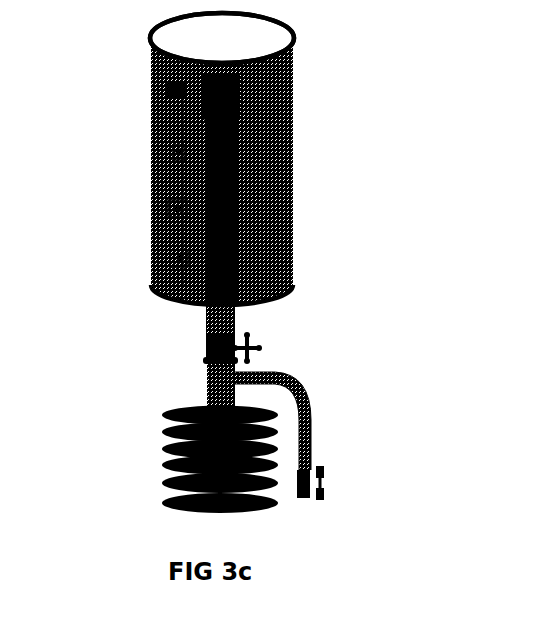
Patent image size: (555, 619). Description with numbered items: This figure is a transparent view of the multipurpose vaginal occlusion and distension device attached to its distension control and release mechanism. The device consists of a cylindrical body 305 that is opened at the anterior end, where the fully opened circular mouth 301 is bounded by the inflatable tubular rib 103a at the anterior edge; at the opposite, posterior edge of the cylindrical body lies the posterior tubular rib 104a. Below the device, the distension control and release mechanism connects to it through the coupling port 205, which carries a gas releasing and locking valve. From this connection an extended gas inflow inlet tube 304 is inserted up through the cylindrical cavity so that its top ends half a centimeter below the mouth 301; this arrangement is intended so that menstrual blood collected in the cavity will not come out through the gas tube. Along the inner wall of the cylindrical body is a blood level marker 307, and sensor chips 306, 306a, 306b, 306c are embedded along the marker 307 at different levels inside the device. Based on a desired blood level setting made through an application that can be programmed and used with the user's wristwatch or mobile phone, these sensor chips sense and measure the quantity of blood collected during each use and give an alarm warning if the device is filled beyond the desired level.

The circular mouth of the fully opened cylindrical body 301 is at (182, 42).
The inflatable tubular rib at the anterior edge of the cylindrical body 103a is at (296, 42).
The sensor chip 306 is at (177, 92).
The sensor chip 306a is at (170, 150).
The sensor chip 306b is at (169, 213).
The sensor chip 306c is at (177, 266).
The blood level marker 307 is at (189, 176).
The extended gas inflow inlet tube 304 is at (238, 154).
The cylindrical body opened at the anterior end 305 is at (281, 185).
The posterior tubular rib at the posterior edge of the cylindrical body 104a is at (287, 290).
The coupling port with gas releasing and locking valve 205 is at (264, 343).